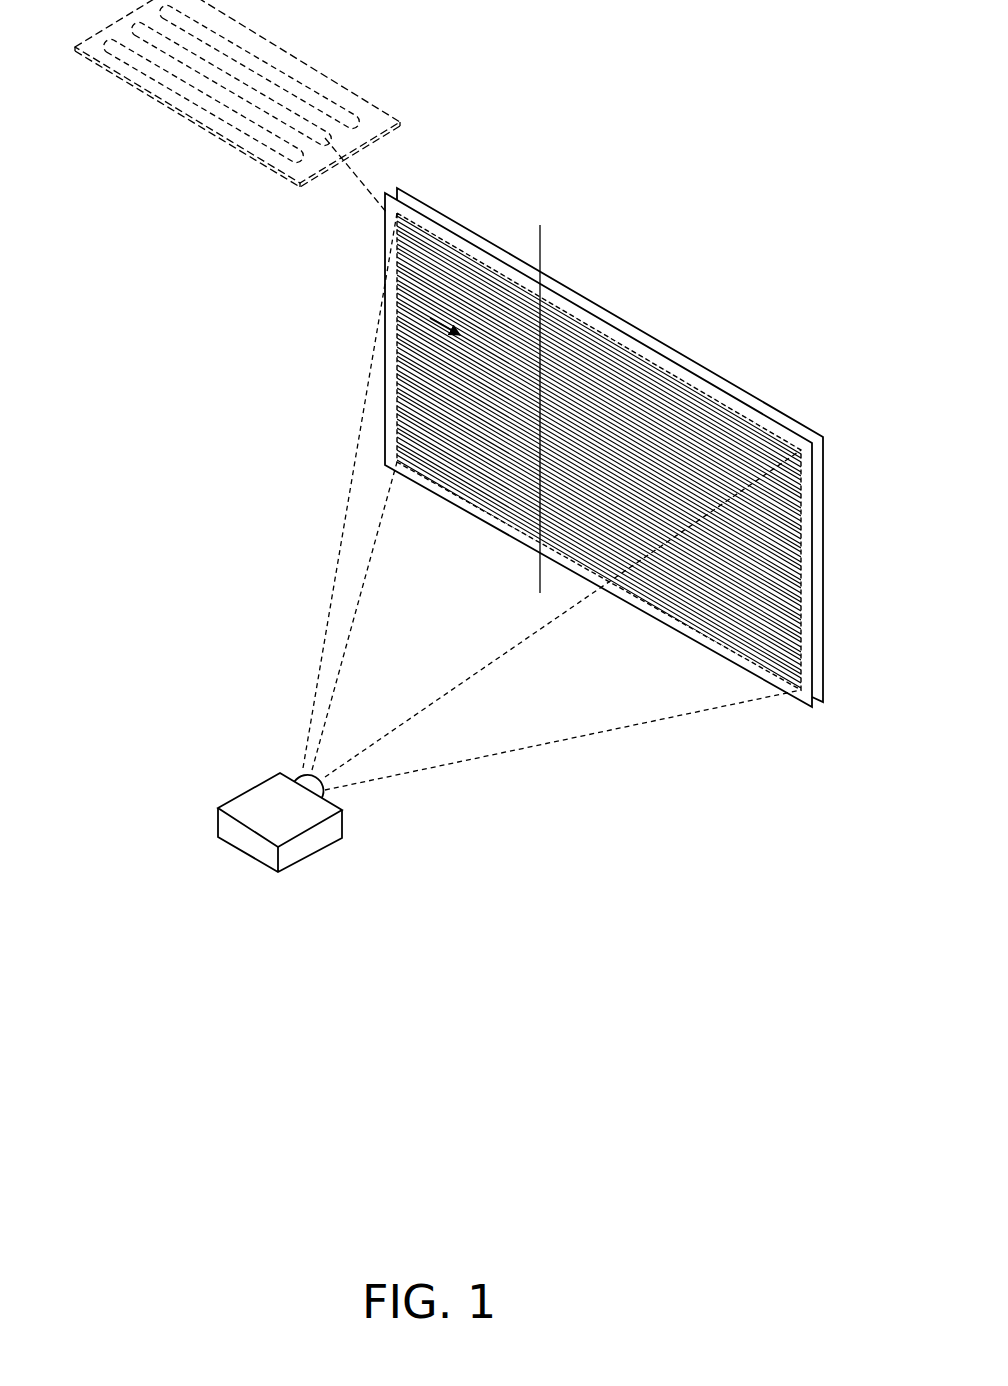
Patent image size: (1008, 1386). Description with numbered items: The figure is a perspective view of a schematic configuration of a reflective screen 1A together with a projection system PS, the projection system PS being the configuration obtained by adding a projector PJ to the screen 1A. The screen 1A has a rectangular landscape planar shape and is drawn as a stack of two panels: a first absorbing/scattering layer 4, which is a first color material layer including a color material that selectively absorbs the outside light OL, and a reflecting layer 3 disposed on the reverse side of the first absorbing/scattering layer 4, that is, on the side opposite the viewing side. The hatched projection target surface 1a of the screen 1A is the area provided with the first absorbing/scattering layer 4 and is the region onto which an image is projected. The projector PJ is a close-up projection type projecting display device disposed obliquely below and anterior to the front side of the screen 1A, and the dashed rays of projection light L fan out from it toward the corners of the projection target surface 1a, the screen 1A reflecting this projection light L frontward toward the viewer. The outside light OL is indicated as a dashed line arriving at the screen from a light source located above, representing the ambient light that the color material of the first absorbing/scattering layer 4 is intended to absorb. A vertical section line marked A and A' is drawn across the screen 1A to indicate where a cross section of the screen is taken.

The light source LS is at (391, 112).
The outside light OL is at (366, 190).
The projection system PS is at (215, 447).
The screen 1A is at (639, 397).
The reflecting layer 3 is at (757, 397).
The first absorbing/scattering layer 4 is at (812, 508).
The projection target surface 1a is at (757, 624).
The section line A is at (534, 406).
The section line A' is at (534, 600).
The projection light L is at (557, 748).
The projector PJ is at (307, 850).